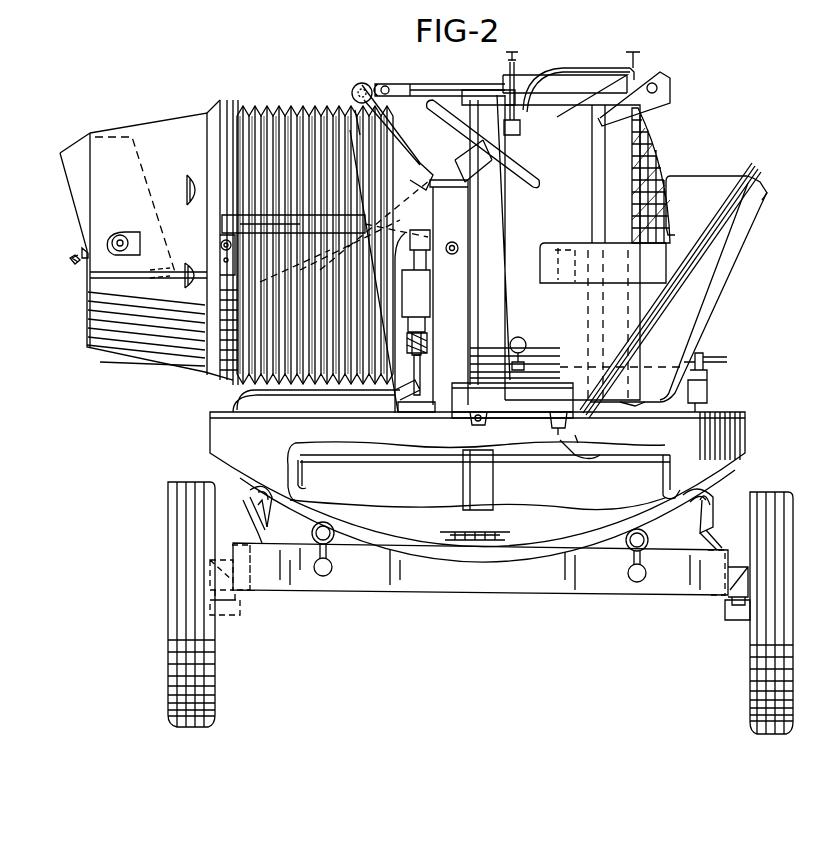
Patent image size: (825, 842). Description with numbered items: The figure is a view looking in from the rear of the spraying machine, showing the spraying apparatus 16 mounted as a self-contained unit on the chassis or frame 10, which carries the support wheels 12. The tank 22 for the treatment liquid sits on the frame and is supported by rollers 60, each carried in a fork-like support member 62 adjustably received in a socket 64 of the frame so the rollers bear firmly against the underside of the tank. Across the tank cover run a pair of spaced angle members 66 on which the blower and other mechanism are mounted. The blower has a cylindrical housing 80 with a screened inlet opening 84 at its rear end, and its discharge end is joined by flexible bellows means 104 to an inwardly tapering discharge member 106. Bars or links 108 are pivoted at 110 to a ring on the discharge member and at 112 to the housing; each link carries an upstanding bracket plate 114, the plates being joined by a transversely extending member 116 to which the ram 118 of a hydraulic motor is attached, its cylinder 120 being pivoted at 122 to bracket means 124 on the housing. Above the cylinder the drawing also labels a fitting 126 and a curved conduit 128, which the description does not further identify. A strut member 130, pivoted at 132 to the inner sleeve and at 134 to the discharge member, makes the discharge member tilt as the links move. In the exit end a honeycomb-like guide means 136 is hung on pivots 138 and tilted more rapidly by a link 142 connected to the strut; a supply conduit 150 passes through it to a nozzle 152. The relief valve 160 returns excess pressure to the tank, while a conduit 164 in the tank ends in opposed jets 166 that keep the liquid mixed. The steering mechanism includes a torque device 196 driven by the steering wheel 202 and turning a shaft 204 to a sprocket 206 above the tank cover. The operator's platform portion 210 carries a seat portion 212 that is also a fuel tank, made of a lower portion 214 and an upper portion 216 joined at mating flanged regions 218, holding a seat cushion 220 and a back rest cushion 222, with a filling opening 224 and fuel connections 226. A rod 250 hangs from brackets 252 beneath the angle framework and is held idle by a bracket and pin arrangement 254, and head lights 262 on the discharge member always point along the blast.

The chassis or frame 10 is at (445, 590).
The support wheels 12 is at (210, 645).
The spraying apparatus 16 is at (692, 89).
The tank 22 is at (210, 440).
The rollers 60 is at (255, 495).
The fork-like support member 62 is at (258, 530).
The socket 64 is at (253, 590).
The angle members 66 is at (455, 400).
The cylindrical housing 80 is at (588, 182).
The screened inlet opening 84 is at (655, 150).
The flexible bellows means 104 is at (292, 103).
The discharge member 106 is at (205, 100).
The bars or links 108 is at (395, 182).
The pivot 110 is at (220, 245).
The pivot 112 is at (462, 247).
The bracket plate 114 is at (350, 128).
The transversely extending member 116 is at (366, 80).
The ram 118 is at (475, 84).
The cylinder 120 is at (585, 82).
The pivot 122 is at (658, 85).
The bracket means 124 is at (652, 78).
The valve 126 is at (520, 62).
The conduit 128 is at (575, 62).
The strut member 130 is at (400, 150).
The pivot 132 is at (468, 125).
The pivot 134 is at (190, 380).
The honeycomb-like guide means 136 is at (75, 180).
The pivots 138 is at (120, 236).
The link 142 is at (160, 270).
The supply conduit 150 is at (85, 252).
The nozzle 152 is at (72, 262).
The relief valve 160 is at (707, 396).
The conduit 164 is at (512, 468).
The opposed jets 166 is at (340, 492).
The torque device 196 is at (430, 290).
The steering wheel 202 is at (527, 183).
The shaft 204 is at (420, 360).
The sprocket 206 is at (445, 412).
The platform portion 210 is at (545, 380).
The seat portion 212 is at (719, 296).
The lower portion 214 is at (685, 328).
The upper portion 216 is at (738, 150).
The mating flanged regions 218 is at (760, 165).
The seat cushion 220 is at (572, 250).
The back rest cushion 222 is at (690, 175).
The filling opening 224 is at (768, 178).
The connections 226 is at (626, 408).
The rod 250 is at (515, 430).
The brackets 252 is at (492, 428).
The bracket and pin arrangement 254 is at (555, 430).
The head lights 262 is at (191, 177).